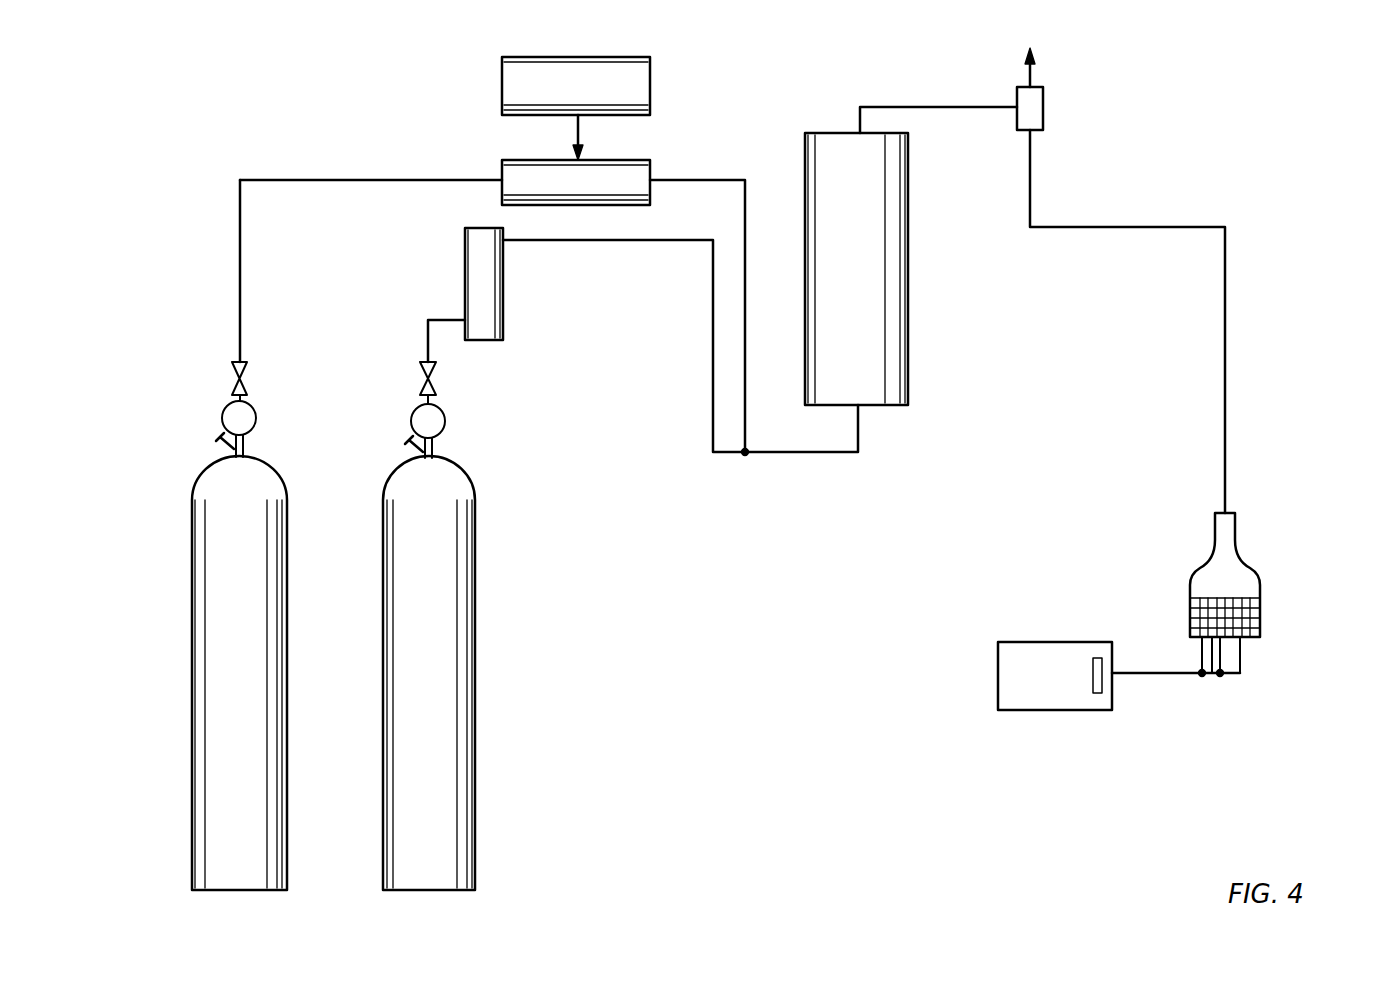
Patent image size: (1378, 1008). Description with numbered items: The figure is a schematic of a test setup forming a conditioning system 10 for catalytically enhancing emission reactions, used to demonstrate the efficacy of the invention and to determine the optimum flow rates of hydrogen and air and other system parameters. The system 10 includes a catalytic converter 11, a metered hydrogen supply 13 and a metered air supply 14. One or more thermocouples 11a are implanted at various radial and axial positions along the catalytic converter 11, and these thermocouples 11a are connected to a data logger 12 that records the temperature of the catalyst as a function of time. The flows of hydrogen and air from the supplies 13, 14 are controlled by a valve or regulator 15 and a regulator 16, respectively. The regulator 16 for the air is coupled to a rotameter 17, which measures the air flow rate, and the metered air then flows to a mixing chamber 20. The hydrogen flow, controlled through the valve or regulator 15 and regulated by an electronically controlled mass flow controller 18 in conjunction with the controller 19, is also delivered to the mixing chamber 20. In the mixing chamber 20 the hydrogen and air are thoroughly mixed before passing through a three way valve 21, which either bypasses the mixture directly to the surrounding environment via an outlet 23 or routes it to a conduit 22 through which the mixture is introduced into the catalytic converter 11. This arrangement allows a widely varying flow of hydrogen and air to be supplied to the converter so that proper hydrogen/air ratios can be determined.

The conditioning system 10 is at (762, 677).
The catalytic converter 11 is at (1237, 540).
The thermocouples 11a is at (1243, 660).
The data logger 12 is at (1067, 715).
The metered hydrogen supply 13 is at (193, 663).
The metered air supply 14 is at (475, 663).
The valve or regulator 15 is at (222, 410).
The regulator 16 is at (445, 410).
The rotameter 17 is at (503, 292).
The mass flow controller 18 is at (502, 160).
The controller 19 is at (502, 83).
The mixing chamber 20 is at (900, 340).
The three way valve 21 is at (1043, 118).
The conduit 22 is at (1133, 230).
The outlet 23 is at (1032, 73).